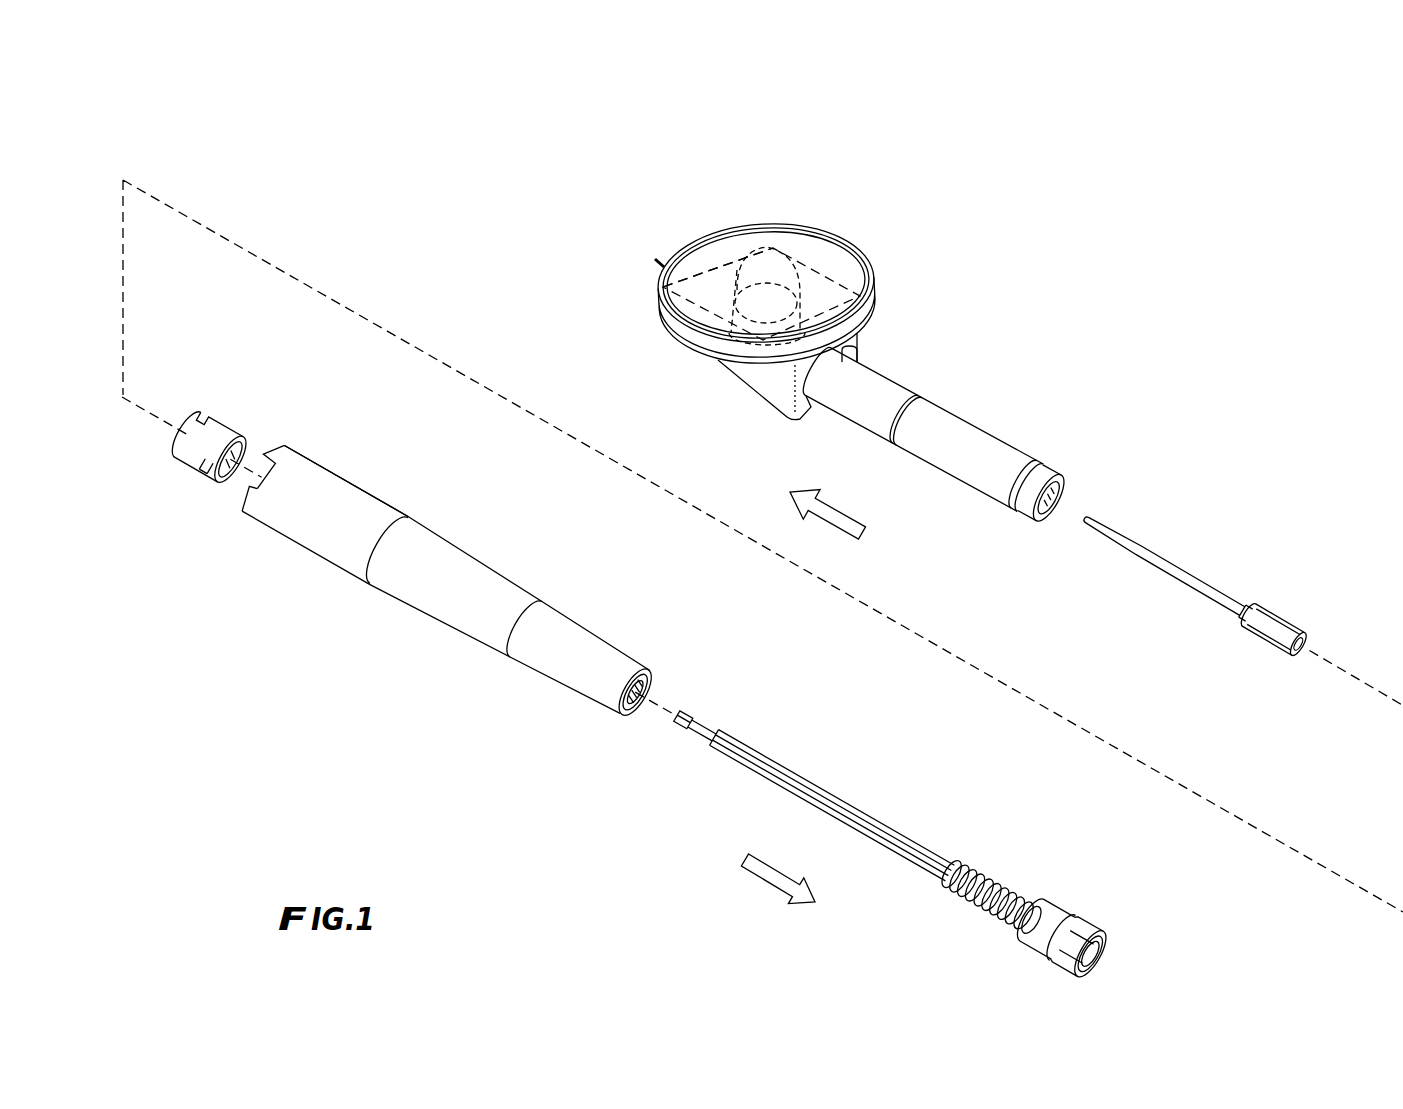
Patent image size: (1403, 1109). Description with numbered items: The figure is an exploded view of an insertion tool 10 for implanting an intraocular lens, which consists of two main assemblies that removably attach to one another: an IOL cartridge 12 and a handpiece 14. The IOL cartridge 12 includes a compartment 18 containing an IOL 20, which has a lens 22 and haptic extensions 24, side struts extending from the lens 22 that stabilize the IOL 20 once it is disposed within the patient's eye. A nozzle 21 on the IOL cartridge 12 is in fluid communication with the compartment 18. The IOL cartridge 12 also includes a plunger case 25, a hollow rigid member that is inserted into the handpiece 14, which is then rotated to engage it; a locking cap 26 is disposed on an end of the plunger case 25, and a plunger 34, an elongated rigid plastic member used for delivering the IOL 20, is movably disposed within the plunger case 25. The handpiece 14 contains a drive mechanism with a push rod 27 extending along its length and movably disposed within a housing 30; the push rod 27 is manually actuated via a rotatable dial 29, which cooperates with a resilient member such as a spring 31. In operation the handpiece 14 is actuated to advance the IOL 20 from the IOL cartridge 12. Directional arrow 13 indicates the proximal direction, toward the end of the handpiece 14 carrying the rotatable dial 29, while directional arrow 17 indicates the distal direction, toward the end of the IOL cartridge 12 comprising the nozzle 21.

The insertion tool 10 is at (353, 143).
The IOL cartridge 12 is at (832, 205).
The directional arrow 13 is at (760, 884).
The handpiece 14 is at (320, 562).
The directional arrow 17 is at (850, 512).
The compartment 18 is at (674, 287).
The IOL 20 is at (712, 308).
The nozzle 21 is at (656, 257).
The lens 22 is at (777, 297).
The haptic extensions 24 is at (737, 265).
The plunger case 25 is at (893, 373).
The locking cap 26 is at (183, 470).
The push rod 27 is at (873, 814).
The rotatable dial 29 is at (1093, 912).
The housing 30 is at (385, 494).
The spring 31 is at (997, 917).
The plunger 34 is at (1210, 563).